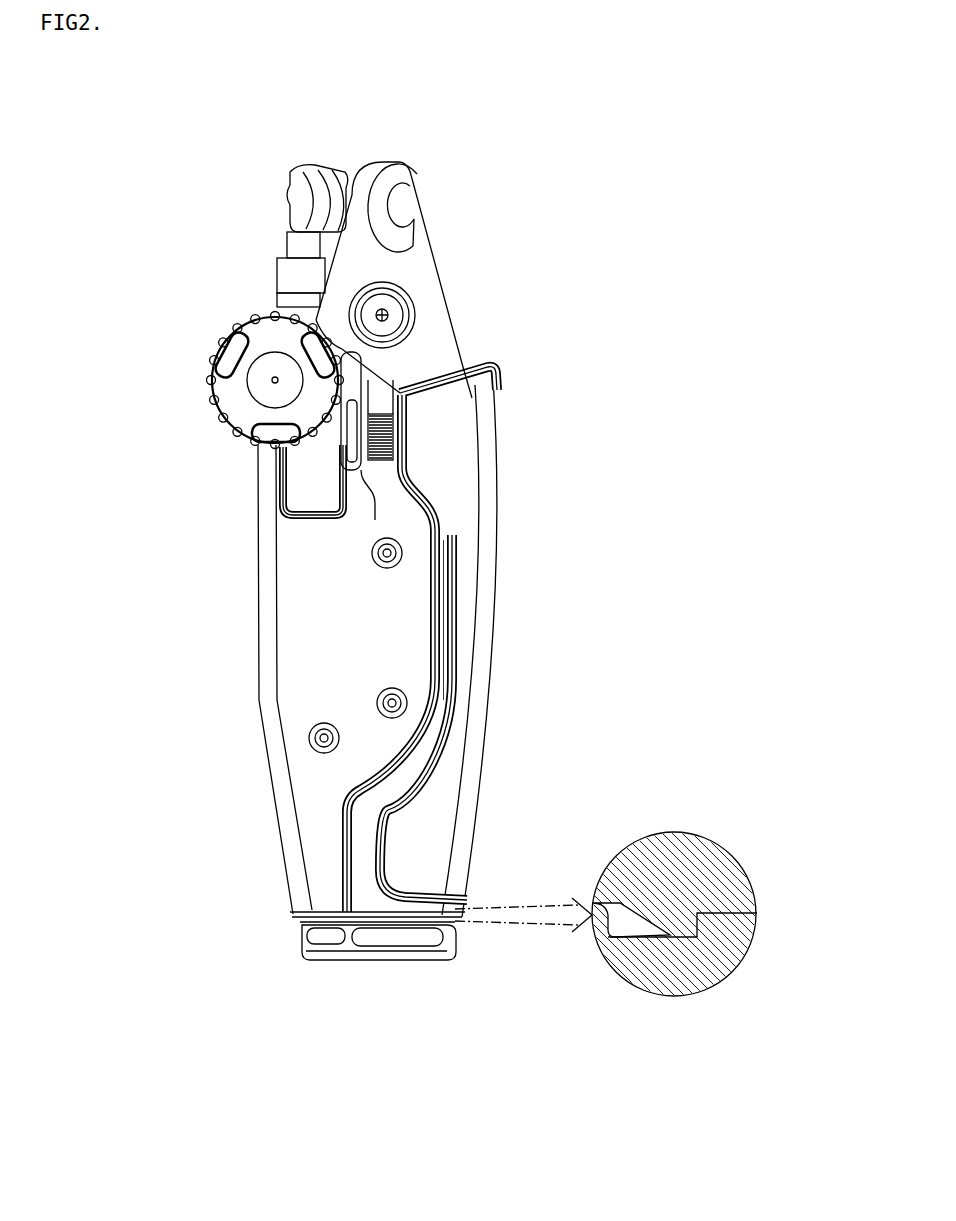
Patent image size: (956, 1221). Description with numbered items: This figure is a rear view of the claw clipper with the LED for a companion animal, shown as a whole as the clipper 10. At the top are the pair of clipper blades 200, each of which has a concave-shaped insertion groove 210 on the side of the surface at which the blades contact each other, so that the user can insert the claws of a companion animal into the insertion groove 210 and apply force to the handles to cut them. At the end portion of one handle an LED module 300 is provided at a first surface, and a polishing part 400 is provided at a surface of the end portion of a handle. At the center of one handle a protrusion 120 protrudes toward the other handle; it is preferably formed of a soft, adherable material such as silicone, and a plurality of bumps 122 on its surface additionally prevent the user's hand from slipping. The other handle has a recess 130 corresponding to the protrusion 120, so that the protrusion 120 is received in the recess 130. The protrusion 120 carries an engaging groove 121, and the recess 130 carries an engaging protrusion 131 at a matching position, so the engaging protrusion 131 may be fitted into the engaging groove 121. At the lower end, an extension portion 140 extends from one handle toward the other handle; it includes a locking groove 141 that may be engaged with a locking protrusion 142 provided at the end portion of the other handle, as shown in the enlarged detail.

The clamping device 10 is at (370, 98).
The protrusion 120 is at (400, 647).
The engaging groove 121 is at (446, 602).
The bumps 122 is at (372, 556).
The recess 130 is at (440, 521).
The engaging protrusion 131 is at (452, 572).
The extension portion 140 is at (364, 975).
The locking groove 141 is at (623, 934).
The locking protrusion 142 is at (700, 908).
The clipper blades 200 is at (470, 243).
The insertion groove 210 is at (422, 196).
The LED module 300 is at (280, 190).
The polishing part 400 is at (205, 333).